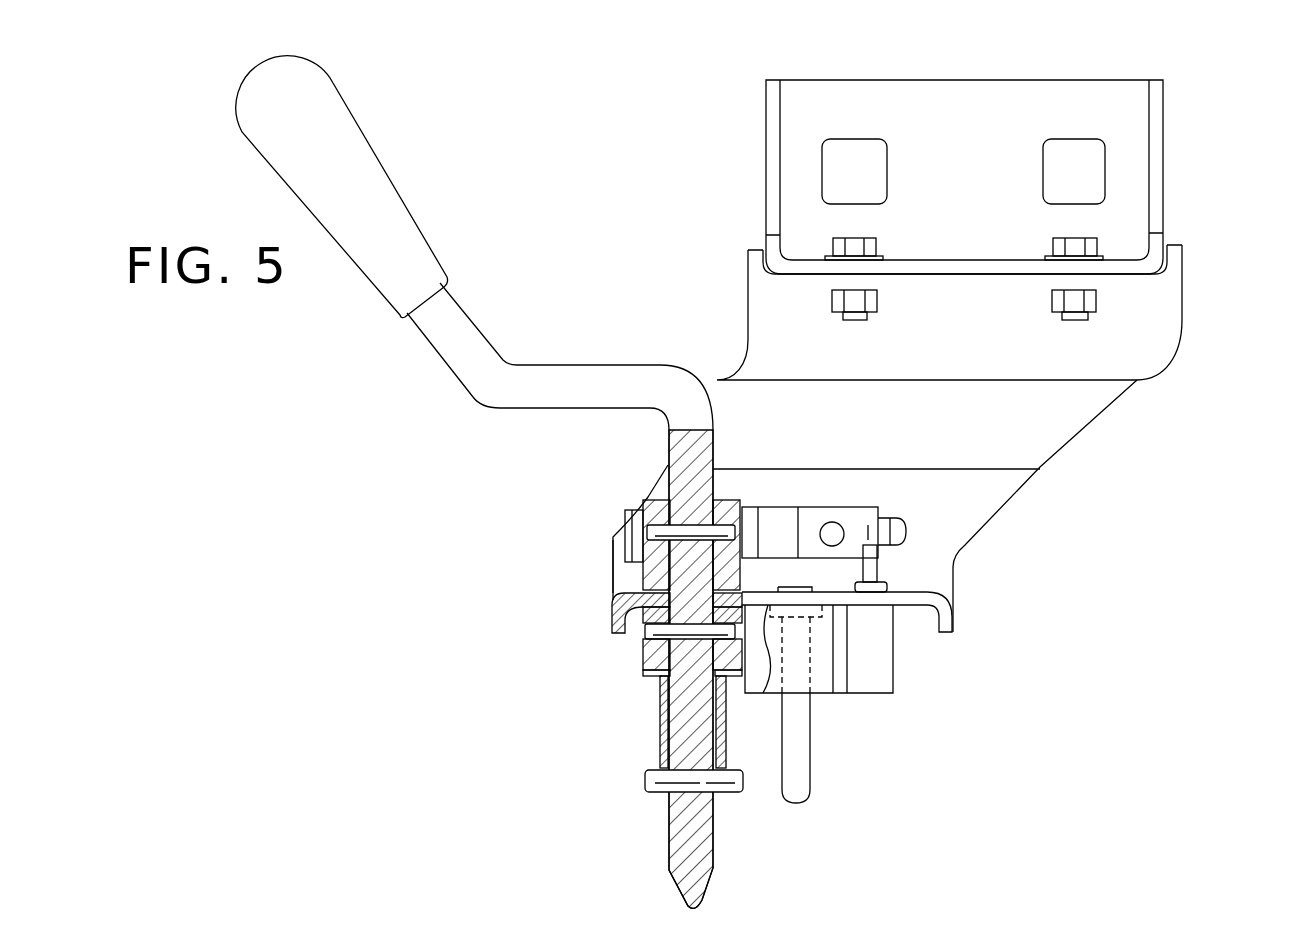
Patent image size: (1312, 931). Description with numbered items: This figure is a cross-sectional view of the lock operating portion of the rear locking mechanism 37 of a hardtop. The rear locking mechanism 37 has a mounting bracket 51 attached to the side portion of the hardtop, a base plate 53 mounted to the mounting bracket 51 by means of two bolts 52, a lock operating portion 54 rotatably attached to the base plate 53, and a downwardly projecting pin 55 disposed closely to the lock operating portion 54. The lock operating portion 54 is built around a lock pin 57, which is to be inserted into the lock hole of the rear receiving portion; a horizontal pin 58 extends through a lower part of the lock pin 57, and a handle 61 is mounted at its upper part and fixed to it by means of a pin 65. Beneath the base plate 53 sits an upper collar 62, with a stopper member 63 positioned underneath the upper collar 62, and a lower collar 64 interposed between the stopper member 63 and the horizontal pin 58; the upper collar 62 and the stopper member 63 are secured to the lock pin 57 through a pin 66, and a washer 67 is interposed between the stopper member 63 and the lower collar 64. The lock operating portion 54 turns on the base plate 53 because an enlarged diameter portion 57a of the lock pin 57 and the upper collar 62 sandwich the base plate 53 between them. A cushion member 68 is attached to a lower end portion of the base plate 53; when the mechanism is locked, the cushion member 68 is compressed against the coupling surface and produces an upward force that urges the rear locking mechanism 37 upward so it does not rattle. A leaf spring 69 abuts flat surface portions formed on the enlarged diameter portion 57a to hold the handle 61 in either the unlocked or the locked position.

The rear locking mechanism 37 is at (605, 120).
The mounting bracket 51 is at (763, 160).
The bolt 52 is at (853, 236).
The base plate 53 is at (955, 569).
The lock operating portion 54 is at (628, 572).
The downwardly projecting pin 55 is at (810, 738).
The lock pin 57 is at (668, 848).
The enlarged diameter portion 57a is at (625, 510).
The horizontal pin 58 is at (645, 781).
The handle 61 is at (383, 158).
The upper collar 62 is at (612, 622).
The stopper member 63 is at (655, 672).
The lower collar 64 is at (660, 722).
The pin 65 is at (645, 532).
The pin 66 is at (640, 637).
The washer 67 is at (660, 680).
The cushion member 68 is at (893, 660).
The leaf spring 69 is at (846, 507).